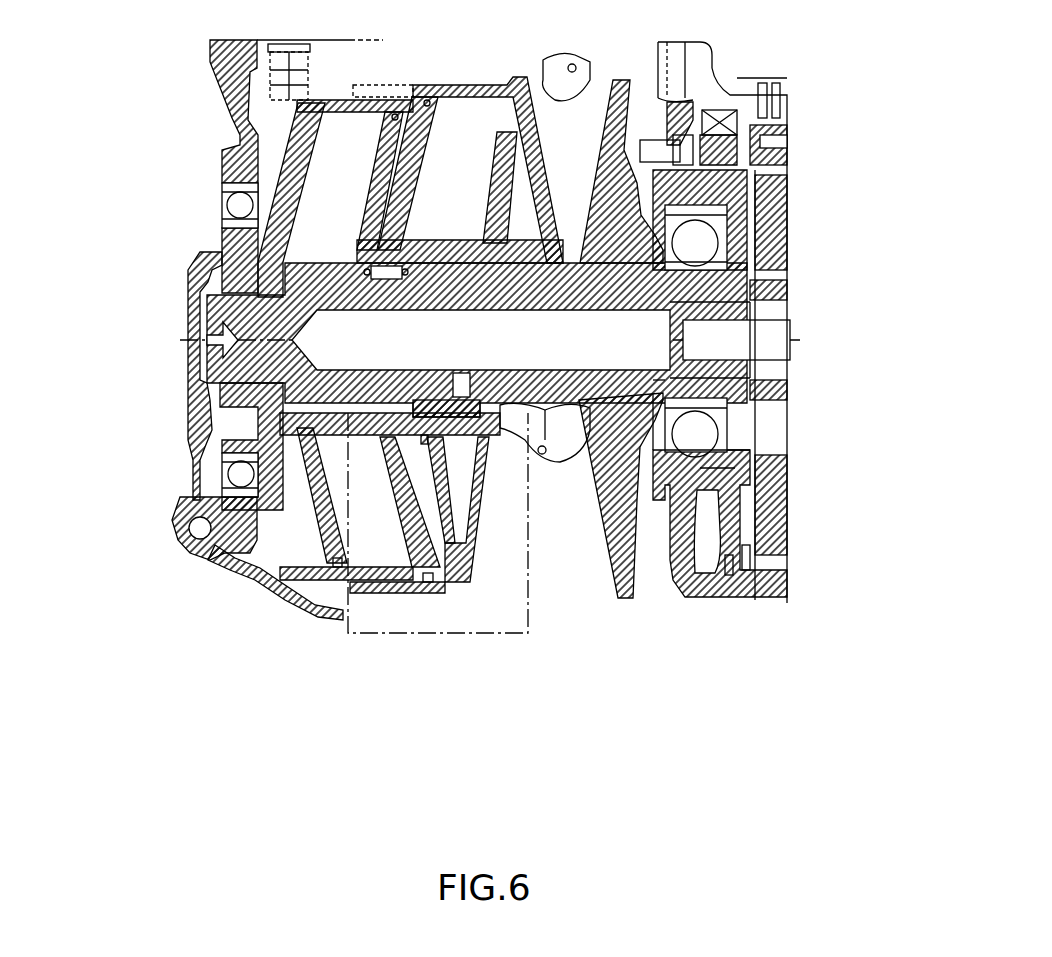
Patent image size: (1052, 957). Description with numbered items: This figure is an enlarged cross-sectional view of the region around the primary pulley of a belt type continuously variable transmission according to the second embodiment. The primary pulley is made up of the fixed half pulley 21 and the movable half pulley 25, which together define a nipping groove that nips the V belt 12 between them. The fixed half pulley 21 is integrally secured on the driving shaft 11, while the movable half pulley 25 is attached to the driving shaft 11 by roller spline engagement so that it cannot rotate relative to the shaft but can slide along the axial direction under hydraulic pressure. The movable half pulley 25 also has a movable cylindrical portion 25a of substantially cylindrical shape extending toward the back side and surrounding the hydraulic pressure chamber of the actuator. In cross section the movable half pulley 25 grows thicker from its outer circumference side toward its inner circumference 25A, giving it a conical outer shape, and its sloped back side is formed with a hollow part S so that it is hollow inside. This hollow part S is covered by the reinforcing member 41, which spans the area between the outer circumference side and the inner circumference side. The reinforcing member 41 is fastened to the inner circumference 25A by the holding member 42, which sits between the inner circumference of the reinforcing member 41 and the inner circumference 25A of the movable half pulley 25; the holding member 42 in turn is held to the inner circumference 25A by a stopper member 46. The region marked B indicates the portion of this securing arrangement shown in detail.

The driving shaft 11 is at (200, 310).
The stopper member 46 is at (421, 445).
The holding member 42 is at (408, 438).
The reinforcing member 41 is at (445, 503).
The inner circumference 25A is at (418, 413).
The V belt 12 is at (543, 462).
The movable cylindrical portion 25a is at (425, 583).
The movable half pulley 25 is at (462, 583).
The fixed half pulley 21 is at (624, 600).
The hollow part S is at (462, 483).
The region B is at (403, 633).